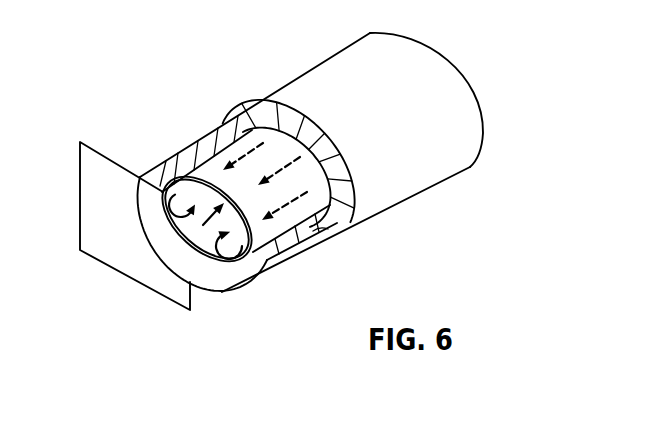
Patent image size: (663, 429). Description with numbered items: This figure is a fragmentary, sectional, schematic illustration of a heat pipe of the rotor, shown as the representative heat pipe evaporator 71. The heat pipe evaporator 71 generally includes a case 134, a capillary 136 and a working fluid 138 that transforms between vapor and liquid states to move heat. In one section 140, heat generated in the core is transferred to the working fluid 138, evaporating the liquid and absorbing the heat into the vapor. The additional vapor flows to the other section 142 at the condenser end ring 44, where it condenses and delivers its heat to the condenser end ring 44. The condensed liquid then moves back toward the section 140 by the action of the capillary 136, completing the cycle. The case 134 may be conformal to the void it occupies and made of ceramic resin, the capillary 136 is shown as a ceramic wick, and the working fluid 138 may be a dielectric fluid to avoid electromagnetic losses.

The section 140 is at (430, 80).
The case 134 is at (333, 226).
The capillary 136 is at (252, 143).
The section 142 is at (160, 177).
The working fluid 138 is at (268, 254).
The condenser end ring 44 is at (117, 237).
The heat pipe evaporator 71 is at (412, 143).